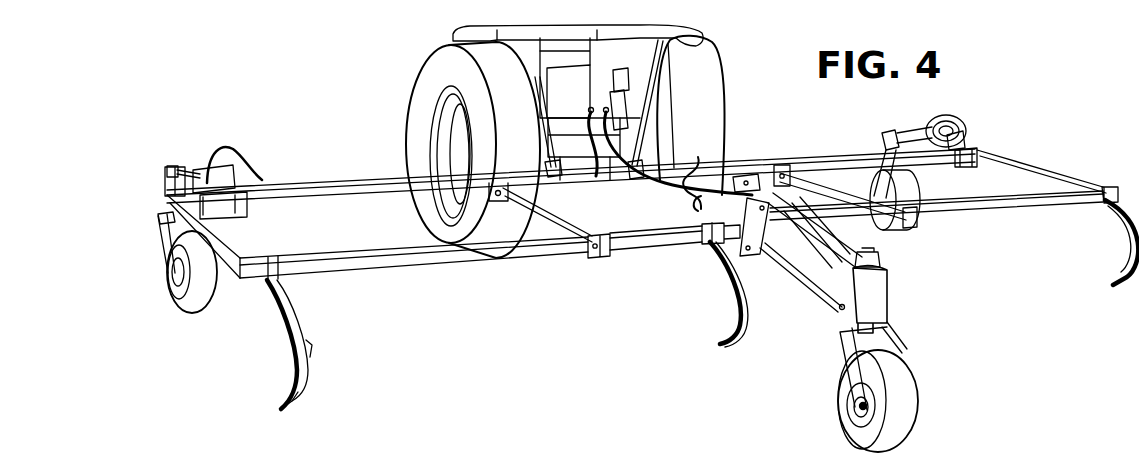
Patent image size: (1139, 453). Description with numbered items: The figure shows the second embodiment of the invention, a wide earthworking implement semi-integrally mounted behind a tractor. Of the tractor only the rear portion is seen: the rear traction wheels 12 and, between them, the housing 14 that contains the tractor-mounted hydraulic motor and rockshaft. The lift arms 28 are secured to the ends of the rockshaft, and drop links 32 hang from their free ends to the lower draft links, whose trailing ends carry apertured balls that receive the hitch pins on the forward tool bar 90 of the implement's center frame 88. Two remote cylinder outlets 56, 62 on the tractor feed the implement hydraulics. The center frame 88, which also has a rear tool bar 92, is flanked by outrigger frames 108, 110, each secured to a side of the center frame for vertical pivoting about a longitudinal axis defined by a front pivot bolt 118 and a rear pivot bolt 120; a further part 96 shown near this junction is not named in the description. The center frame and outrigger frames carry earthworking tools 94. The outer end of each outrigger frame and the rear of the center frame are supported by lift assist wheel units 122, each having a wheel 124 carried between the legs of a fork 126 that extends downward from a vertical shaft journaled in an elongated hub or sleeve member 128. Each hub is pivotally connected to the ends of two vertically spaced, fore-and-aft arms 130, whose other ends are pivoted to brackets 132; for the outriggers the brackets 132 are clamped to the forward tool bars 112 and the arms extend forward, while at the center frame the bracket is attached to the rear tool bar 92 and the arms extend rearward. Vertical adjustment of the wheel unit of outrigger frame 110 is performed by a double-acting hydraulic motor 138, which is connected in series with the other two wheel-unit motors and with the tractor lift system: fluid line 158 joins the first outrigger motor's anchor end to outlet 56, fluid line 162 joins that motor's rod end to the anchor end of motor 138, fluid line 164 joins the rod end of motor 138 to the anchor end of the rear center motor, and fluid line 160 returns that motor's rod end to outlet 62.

The rear traction wheels 12 is at (447, 53).
The housing 14 is at (547, 82).
The lift arms 28 is at (613, 76).
The drop links 32 is at (645, 87).
The remote cylinder outlet 56 is at (589, 109).
The remote cylinder outlet 62 is at (605, 108).
The center frame 88 is at (677, 257).
The forward tool bar 90 is at (591, 187).
The rear tool bar 92 is at (634, 250).
The earthworking tools 94 is at (290, 383).
The hinge 96 is at (704, 244).
The outrigger frame 108 is at (467, 270).
The outrigger frame 110 is at (1013, 217).
The forward tool bars 112 is at (300, 207).
The front pivot bolt 118 is at (499, 204).
The rear pivot bolt 120 is at (597, 252).
The lift assist wheel unit 122 is at (148, 227).
The wheel 124 is at (180, 300).
The fork 126 is at (163, 240).
The hub or sleeve member 128 is at (165, 177).
The arms 130 is at (167, 167).
The brackets 132 is at (232, 180).
The double-acting hydraulic motor 138 is at (966, 167).
The fluid line 158 is at (236, 152).
The fluid line 160 is at (702, 203).
The fluid line 162 is at (197, 167).
The fluid line 164 is at (699, 166).